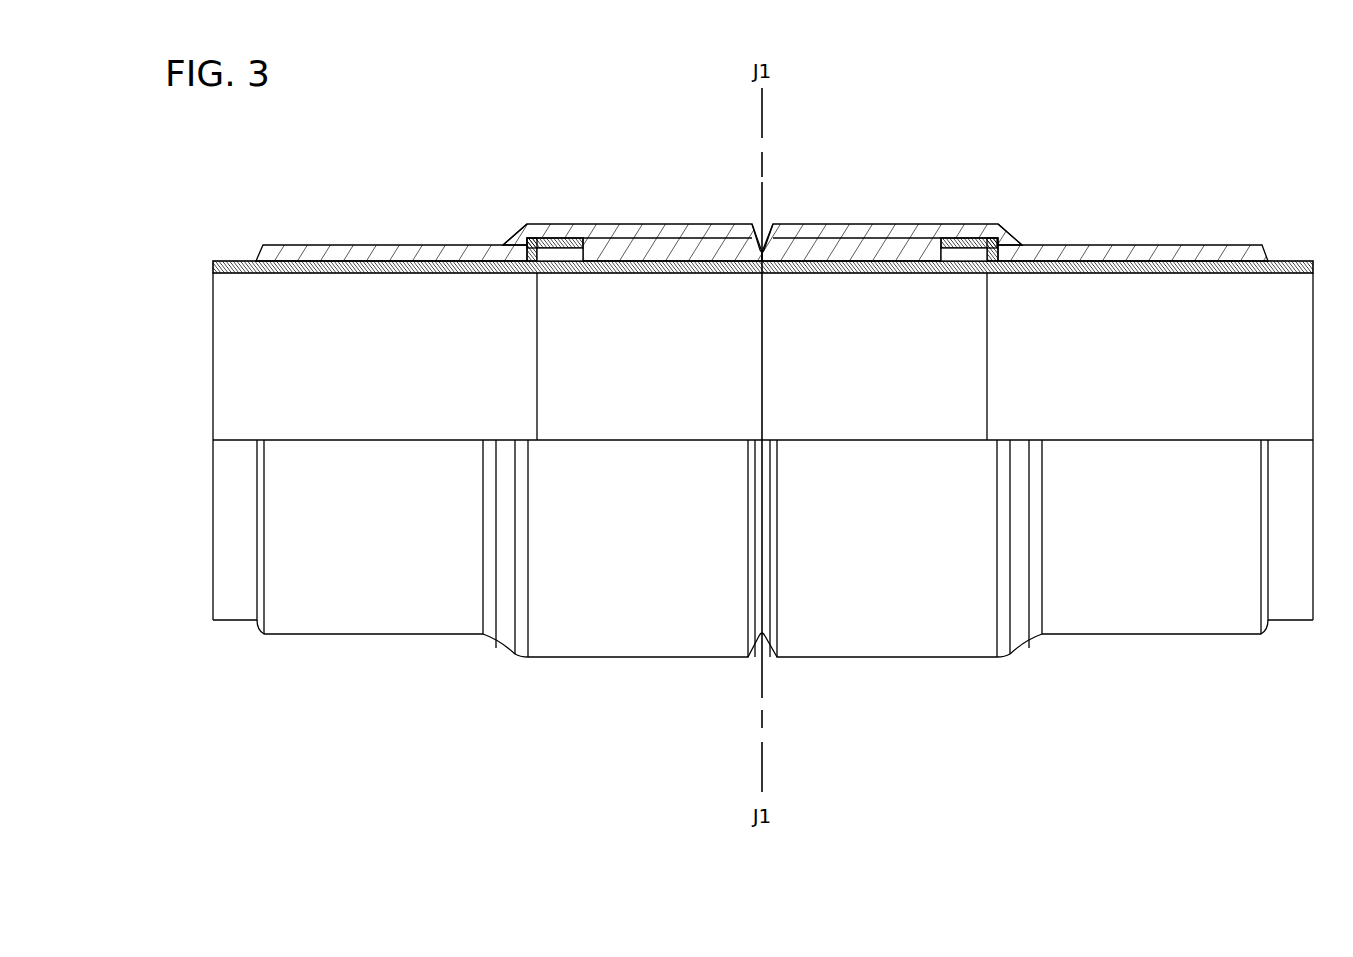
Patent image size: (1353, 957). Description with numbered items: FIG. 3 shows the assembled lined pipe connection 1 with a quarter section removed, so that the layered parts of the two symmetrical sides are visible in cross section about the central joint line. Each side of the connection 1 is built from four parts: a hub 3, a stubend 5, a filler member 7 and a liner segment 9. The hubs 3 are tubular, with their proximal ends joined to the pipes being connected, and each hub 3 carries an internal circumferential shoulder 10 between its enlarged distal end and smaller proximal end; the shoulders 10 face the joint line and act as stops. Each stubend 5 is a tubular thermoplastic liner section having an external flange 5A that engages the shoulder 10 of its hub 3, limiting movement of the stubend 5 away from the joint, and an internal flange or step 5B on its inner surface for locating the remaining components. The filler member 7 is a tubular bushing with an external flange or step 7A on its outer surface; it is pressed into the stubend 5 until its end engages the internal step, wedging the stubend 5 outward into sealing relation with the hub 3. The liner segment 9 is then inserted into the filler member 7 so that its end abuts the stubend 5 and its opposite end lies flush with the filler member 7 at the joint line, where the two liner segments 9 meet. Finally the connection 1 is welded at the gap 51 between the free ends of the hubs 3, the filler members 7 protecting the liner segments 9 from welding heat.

The connection 1 is at (1240, 112).
The hub 3 is at (372, 634).
The stubend 5 is at (380, 258).
The flange 5A is at (500, 244).
The internal flange or step 5B is at (538, 240).
The filler member 7 is at (762, 197).
The external flange or step 7A is at (578, 240).
The liner segment 9 is at (655, 240).
The internal circumferential shoulder 10 is at (527, 238).
The gap 51 is at (750, 205).